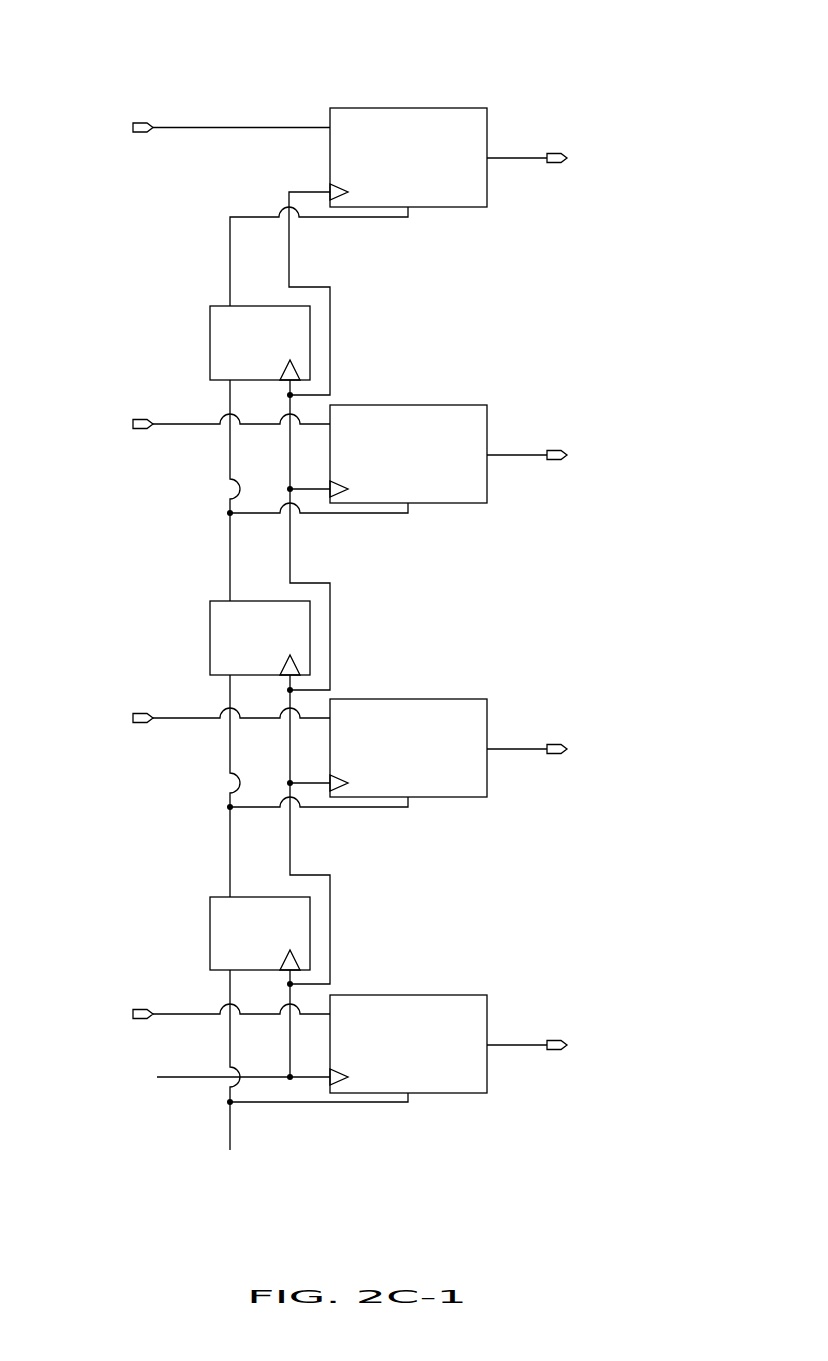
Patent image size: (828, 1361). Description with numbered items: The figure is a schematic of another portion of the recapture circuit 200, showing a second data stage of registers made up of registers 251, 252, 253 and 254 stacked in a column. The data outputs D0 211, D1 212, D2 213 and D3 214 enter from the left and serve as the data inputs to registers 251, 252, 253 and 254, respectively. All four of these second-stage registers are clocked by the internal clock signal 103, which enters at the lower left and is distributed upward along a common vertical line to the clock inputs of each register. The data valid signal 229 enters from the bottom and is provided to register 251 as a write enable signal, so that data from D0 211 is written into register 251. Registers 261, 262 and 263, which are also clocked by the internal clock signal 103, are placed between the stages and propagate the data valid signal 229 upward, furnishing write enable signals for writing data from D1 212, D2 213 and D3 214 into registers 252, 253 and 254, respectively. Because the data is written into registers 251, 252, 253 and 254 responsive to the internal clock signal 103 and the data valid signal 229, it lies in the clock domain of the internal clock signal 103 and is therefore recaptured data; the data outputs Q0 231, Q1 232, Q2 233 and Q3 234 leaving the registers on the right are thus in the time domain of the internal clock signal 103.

The recapture circuit 200 is at (492, 44).
The data output D3 214 is at (90, 148).
The data output D2 213 is at (90, 445).
The data output D1 212 is at (90, 739).
The data output D0 211 is at (90, 1035).
The register 254 is at (395, 178).
The register 253 is at (395, 475).
The register 252 is at (395, 769).
The register 251 is at (395, 1065).
The data output Q3 234 is at (578, 178).
The data output Q2 233 is at (578, 475).
The data output Q1 232 is at (578, 769).
The data output Q0 231 is at (578, 1065).
The register 263 is at (245, 353).
The register 262 is at (245, 648).
The register 261 is at (245, 943).
The internal clock signal 103 is at (105, 1110).
The data valid signal 229 is at (213, 1211).